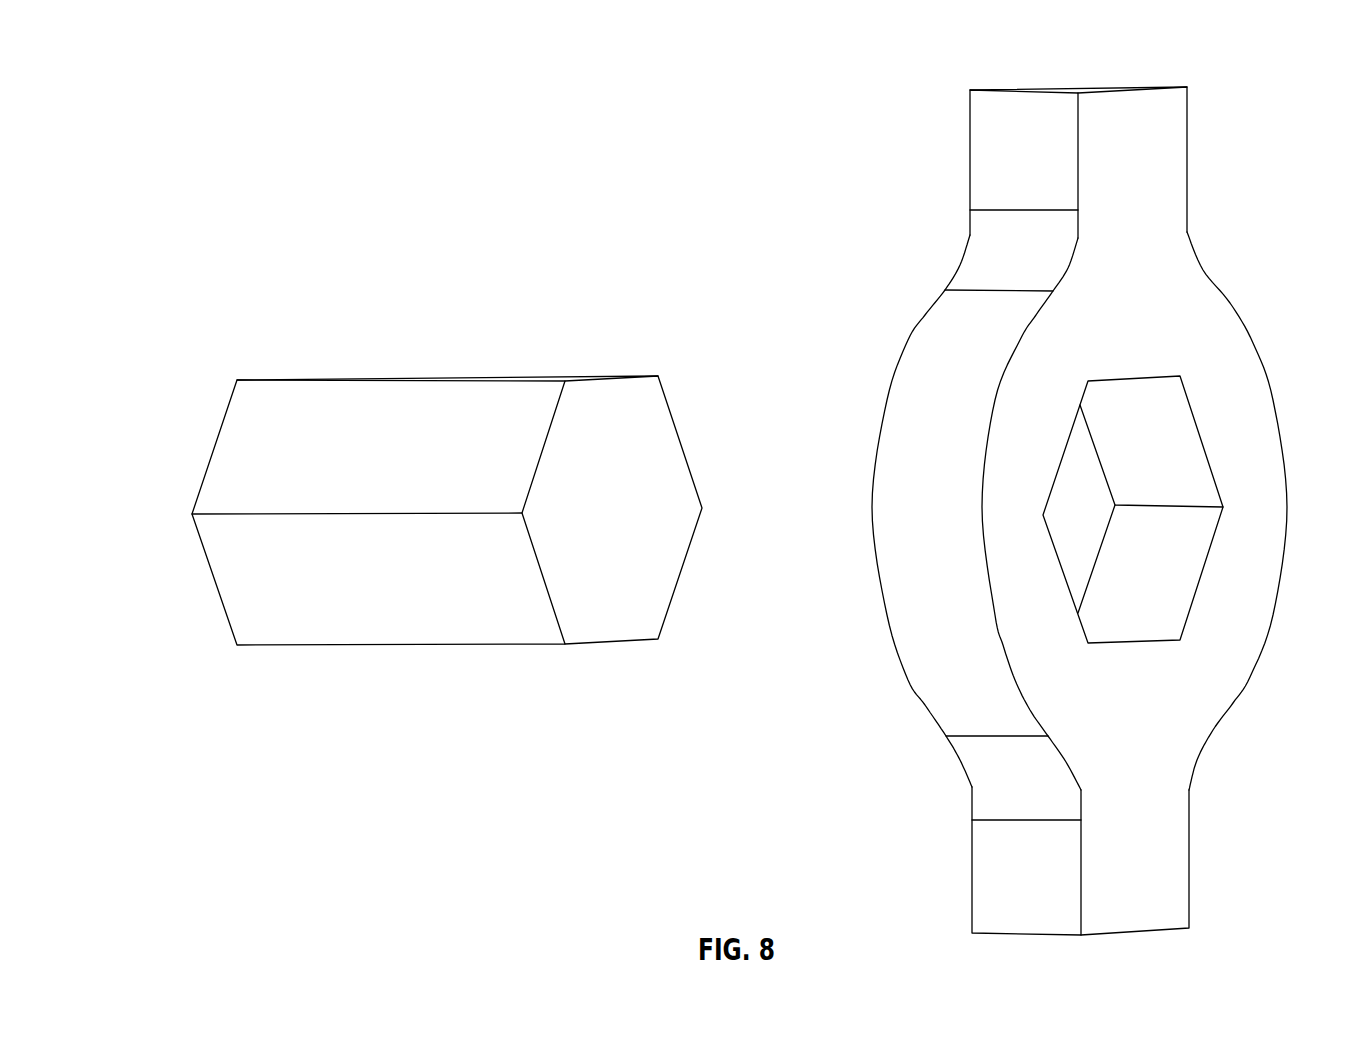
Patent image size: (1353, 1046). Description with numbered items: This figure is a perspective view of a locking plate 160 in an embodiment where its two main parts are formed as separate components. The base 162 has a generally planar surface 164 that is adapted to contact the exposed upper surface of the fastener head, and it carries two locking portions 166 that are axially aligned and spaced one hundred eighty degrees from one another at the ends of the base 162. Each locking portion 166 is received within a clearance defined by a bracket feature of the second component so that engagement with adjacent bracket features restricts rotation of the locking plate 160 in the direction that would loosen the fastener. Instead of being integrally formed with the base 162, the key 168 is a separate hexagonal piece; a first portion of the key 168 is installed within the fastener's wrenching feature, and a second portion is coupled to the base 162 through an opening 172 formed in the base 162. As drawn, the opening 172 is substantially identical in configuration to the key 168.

The locking plate 160 is at (165, 74).
The base 162 is at (917, 383).
The generally planar surface 164 is at (1232, 387).
The locking portion 166 is at (1155, 158).
The key 168 is at (437, 378).
The opening 172 is at (1090, 532).